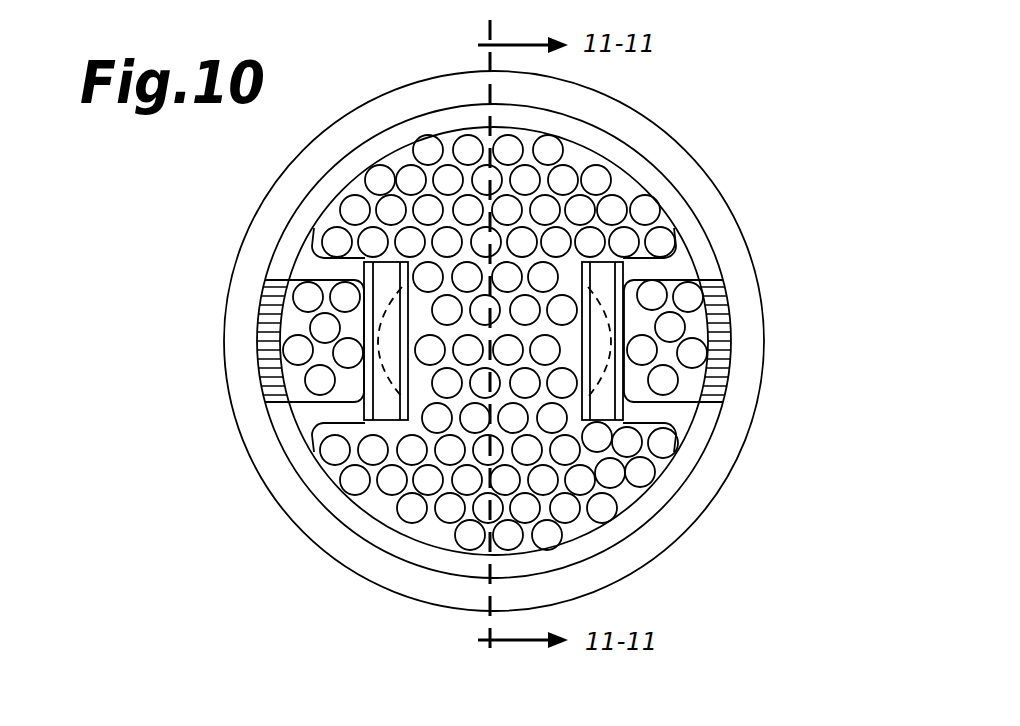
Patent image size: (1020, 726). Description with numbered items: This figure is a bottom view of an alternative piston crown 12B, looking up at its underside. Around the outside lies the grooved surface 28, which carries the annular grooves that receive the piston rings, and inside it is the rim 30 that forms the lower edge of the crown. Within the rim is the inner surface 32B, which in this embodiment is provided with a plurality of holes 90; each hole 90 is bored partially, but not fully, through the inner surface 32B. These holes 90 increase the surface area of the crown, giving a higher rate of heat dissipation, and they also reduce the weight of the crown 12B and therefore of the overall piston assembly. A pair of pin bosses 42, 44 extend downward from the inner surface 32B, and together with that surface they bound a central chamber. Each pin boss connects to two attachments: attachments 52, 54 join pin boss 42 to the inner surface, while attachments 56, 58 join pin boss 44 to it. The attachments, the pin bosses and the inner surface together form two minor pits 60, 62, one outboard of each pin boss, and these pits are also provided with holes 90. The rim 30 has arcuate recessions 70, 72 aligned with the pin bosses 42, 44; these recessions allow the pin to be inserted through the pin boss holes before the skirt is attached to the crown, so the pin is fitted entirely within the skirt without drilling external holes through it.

The piston crown 12B is at (752, 123).
The grooved surface 28 is at (372, 84).
The rim 30 is at (708, 240).
The inner surface 32B is at (531, 214).
The pin boss 42 is at (388, 275).
The pin boss 44 is at (600, 398).
The attachment 52 is at (650, 268).
The attachment 54 is at (663, 415).
The attachment 56 is at (327, 268).
The attachment 58 is at (352, 415).
The minor pit 60 is at (293, 324).
The minor pit 62 is at (640, 325).
The arcuate recession 70 is at (717, 387).
The arcuate recession 72 is at (265, 363).
The hole 90 is at (443, 387).